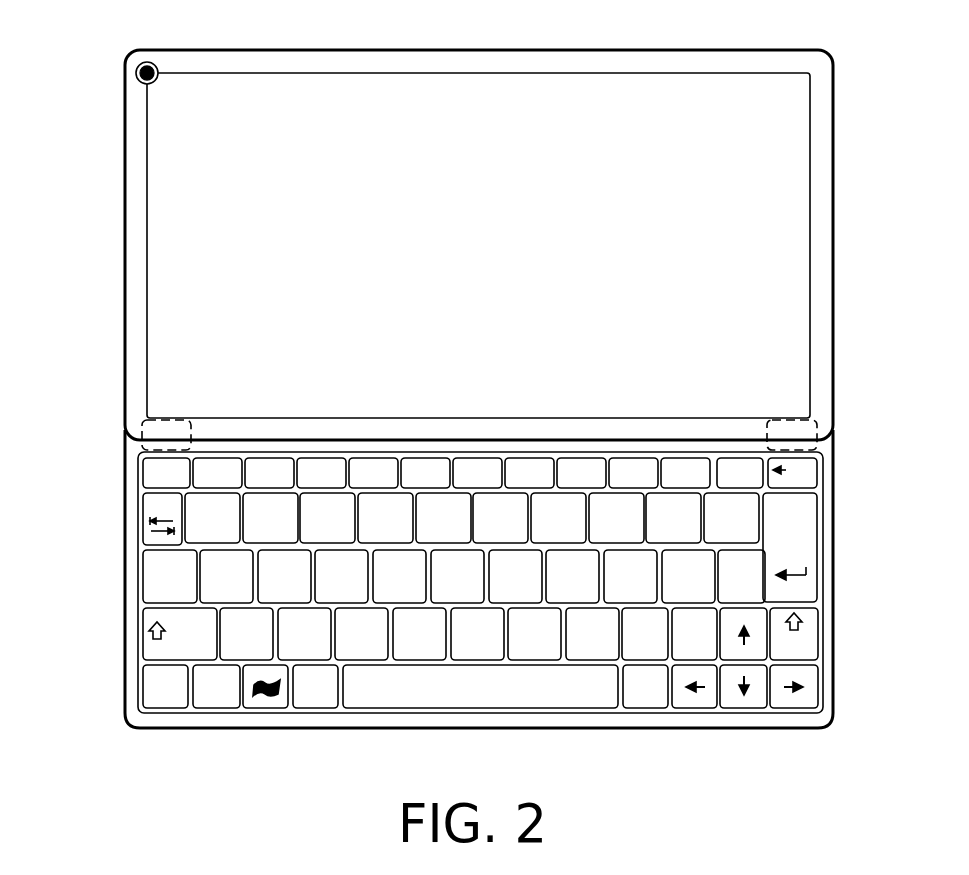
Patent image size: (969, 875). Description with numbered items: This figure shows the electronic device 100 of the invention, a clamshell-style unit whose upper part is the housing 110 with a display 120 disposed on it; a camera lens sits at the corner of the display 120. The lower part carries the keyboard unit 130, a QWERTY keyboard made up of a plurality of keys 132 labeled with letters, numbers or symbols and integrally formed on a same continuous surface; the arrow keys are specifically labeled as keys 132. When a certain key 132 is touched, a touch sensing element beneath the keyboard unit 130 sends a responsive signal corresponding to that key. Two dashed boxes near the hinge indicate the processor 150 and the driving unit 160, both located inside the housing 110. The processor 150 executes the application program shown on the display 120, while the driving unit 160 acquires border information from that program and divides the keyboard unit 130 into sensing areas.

The electronic device 100 is at (95, 77).
The housing 110 is at (125, 388).
The display 120 is at (147, 183).
The keyboard unit 130 is at (136, 557).
The keys 132 is at (703, 700).
The processor 150 is at (141, 428).
The driving unit 160 is at (818, 428).